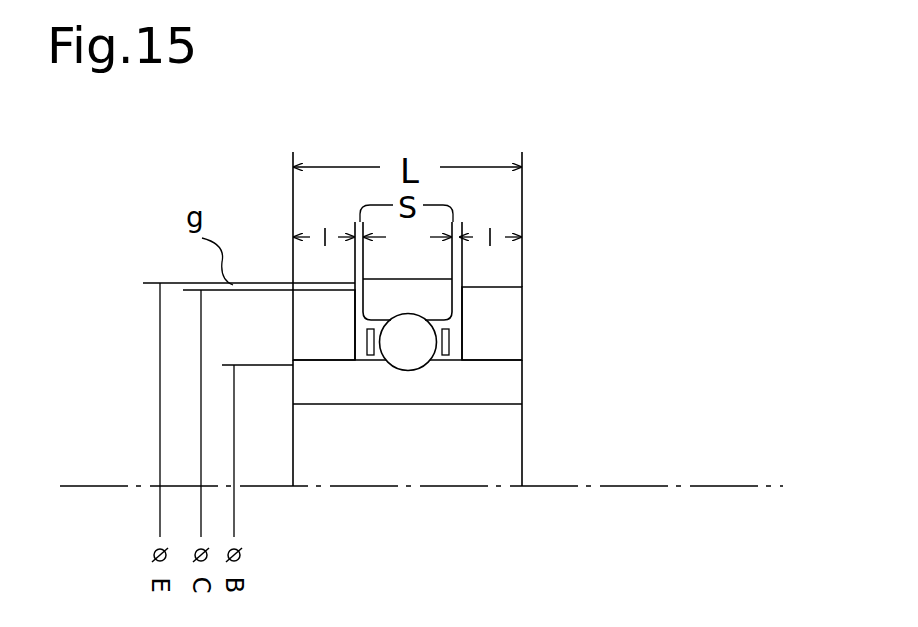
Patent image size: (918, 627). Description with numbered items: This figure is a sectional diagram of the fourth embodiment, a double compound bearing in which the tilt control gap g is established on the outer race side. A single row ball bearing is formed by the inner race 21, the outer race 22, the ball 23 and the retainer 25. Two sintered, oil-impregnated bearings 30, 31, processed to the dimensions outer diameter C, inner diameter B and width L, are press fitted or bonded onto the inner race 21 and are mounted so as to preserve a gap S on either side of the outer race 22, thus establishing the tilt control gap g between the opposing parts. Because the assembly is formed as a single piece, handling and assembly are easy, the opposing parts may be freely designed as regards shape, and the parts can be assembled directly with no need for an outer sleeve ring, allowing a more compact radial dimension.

The inner race 21 is at (498, 388).
The outer race 22 is at (417, 283).
The ball 23 is at (410, 350).
The retainer 25 is at (448, 336).
The sintered, oil-impregnated bearing 30 is at (322, 330).
The sintered, oil-impregnated bearing 31 is at (494, 302).